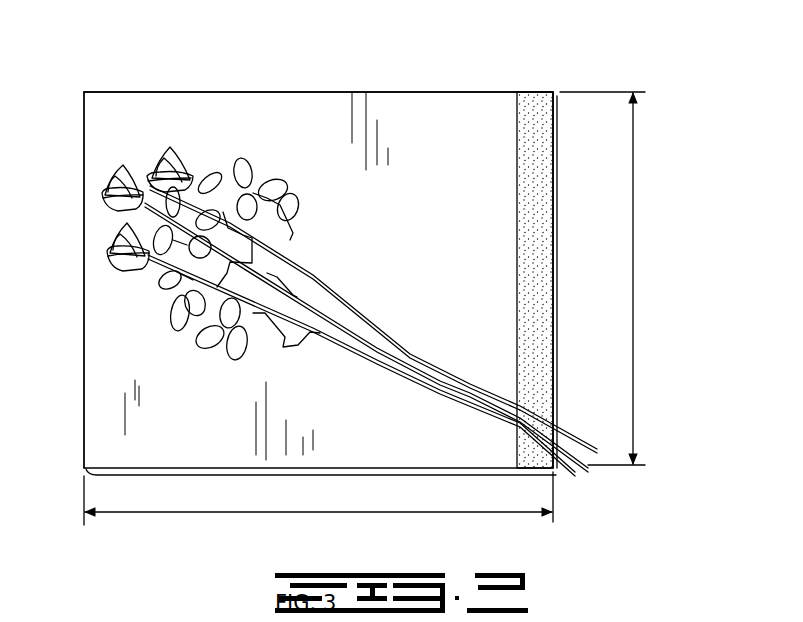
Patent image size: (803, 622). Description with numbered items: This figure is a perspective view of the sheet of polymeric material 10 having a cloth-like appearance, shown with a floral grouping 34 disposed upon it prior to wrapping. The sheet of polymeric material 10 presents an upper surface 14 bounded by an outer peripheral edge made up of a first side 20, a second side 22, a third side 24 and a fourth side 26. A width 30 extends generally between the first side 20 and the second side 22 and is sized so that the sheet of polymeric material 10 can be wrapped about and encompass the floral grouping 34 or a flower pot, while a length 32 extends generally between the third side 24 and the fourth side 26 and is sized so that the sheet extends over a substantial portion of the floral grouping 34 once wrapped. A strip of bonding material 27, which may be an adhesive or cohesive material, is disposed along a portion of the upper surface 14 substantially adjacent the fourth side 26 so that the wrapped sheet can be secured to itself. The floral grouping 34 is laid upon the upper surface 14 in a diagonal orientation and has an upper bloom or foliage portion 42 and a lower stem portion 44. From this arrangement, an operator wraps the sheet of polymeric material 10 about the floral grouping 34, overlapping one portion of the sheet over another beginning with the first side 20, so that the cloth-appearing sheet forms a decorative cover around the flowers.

The sheet of polymeric material 10 is at (112, 56).
The upper surface 14 is at (457, 108).
The first side 20 is at (237, 470).
The second side 22 is at (262, 92).
The third side 24 is at (84, 333).
The fourth side 26 is at (556, 302).
The bonding material 27 is at (540, 161).
The width 30 is at (633, 275).
The length 32 is at (331, 512).
The floral grouping 34 is at (313, 311).
The upper bloom or foliage portion 42 is at (113, 190).
The lower stem portion 44 is at (456, 400).